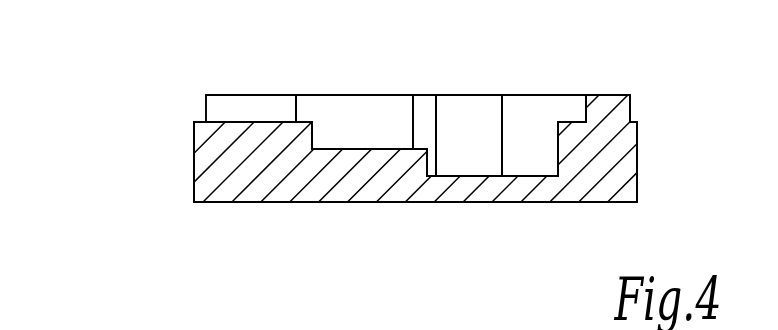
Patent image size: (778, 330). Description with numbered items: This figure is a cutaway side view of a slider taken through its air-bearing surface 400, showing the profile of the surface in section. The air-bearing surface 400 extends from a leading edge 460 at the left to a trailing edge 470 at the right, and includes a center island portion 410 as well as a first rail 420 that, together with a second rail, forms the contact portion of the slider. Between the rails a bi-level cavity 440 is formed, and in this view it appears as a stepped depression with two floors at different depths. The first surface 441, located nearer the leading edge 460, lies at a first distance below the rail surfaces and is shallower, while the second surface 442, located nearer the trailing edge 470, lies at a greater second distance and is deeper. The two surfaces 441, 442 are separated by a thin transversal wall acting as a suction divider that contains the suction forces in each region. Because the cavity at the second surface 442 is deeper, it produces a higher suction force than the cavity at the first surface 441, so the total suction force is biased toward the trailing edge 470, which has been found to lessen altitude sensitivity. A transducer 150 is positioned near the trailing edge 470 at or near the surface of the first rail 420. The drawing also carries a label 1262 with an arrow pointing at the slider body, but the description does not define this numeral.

The transducer 150 is at (630, 94).
The trailing edge 470 is at (637, 161).
The leading edge 460 is at (194, 162).
The air-bearing surface 400 is at (352, 148).
The bi-level cavity 440 is at (325, 148).
The first surface 441 is at (378, 148).
The second surface 442 is at (480, 176).
The first rail 420 is at (497, 100).
The center island portion 410 is at (598, 94).
The structure 1262 is at (140, 123).